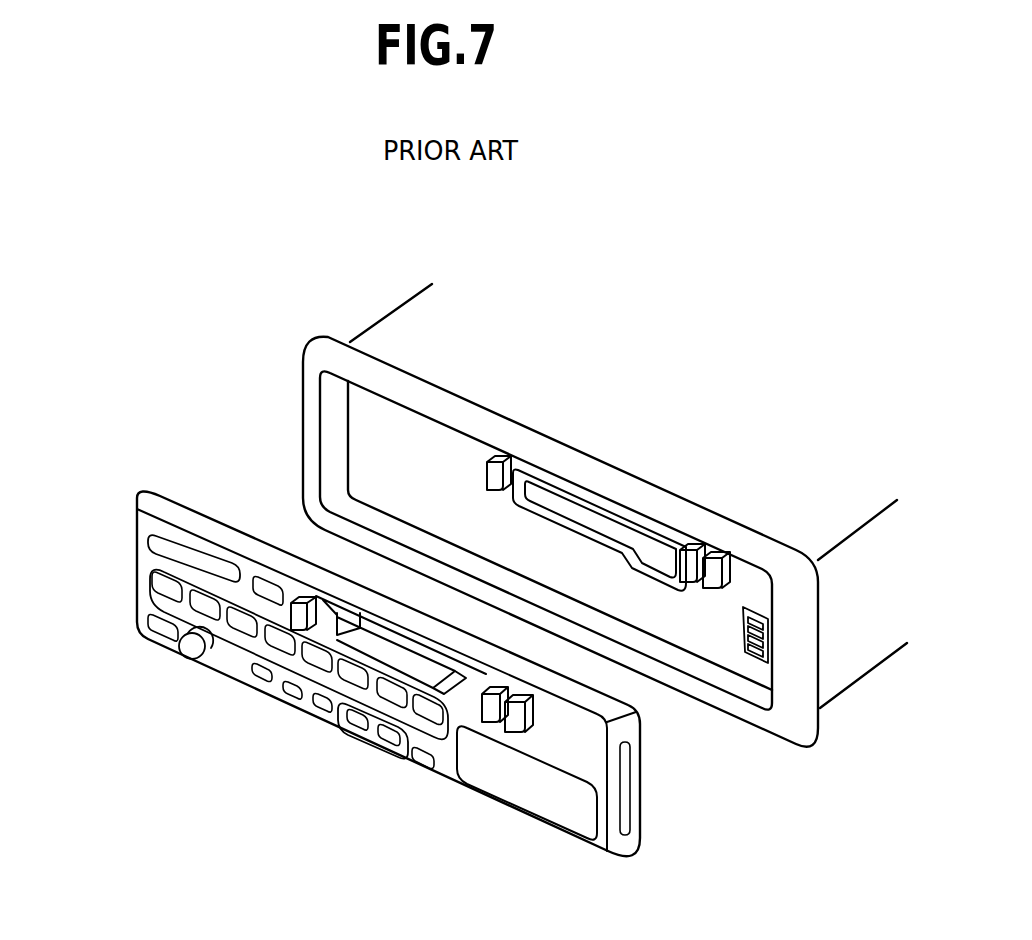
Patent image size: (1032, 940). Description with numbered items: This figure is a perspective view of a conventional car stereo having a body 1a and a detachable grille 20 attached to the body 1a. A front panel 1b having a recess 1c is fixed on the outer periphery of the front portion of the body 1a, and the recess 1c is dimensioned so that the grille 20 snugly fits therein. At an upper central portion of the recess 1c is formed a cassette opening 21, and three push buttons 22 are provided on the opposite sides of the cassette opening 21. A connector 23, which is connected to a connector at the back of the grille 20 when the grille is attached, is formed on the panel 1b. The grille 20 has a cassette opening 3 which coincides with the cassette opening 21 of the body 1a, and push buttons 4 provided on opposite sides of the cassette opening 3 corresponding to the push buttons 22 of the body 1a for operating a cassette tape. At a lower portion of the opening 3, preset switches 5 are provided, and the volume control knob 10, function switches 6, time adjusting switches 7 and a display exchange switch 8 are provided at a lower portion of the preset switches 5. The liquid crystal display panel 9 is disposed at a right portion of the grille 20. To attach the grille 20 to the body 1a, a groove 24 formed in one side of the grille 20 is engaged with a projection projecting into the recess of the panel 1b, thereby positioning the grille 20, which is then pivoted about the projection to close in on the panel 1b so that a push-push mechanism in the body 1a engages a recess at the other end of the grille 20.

The car stereo body 1a is at (700, 371).
The front panel 1b is at (337, 355).
The recess 1c is at (375, 474).
The cassette opening 3 is at (402, 654).
The push buttons 4 is at (305, 603).
The preset switches 5 is at (139, 581).
The function switches 6 is at (298, 698).
The time adjusting switches 7 is at (388, 738).
The display exchange switch 8 is at (421, 762).
The liquid crystal display panel 9 is at (520, 800).
The volume control knob 10 is at (192, 646).
The detachable grille 20 is at (160, 464).
The cassette opening 21 is at (612, 523).
The push buttons 22 is at (497, 466).
The connector 23 is at (743, 630).
The groove 24 is at (630, 800).